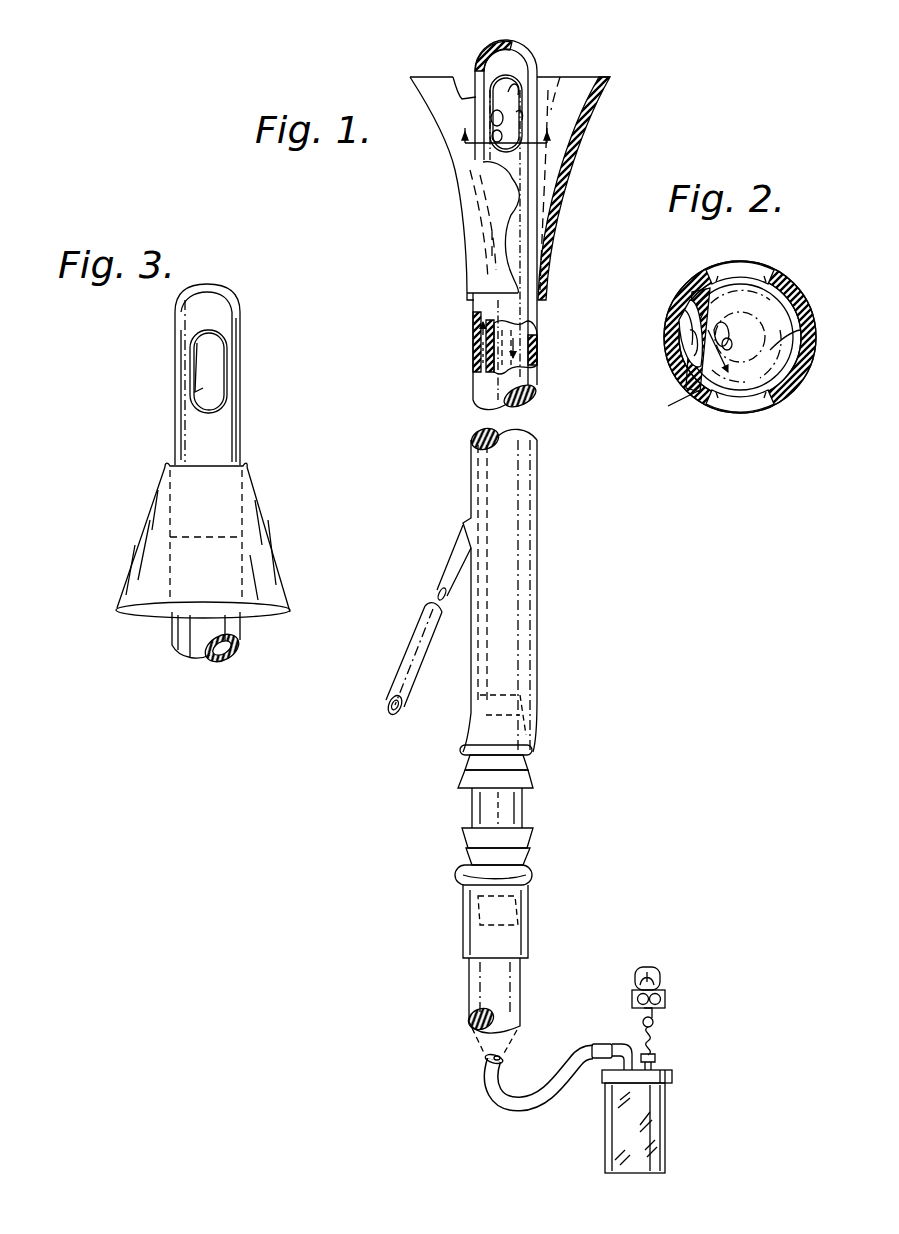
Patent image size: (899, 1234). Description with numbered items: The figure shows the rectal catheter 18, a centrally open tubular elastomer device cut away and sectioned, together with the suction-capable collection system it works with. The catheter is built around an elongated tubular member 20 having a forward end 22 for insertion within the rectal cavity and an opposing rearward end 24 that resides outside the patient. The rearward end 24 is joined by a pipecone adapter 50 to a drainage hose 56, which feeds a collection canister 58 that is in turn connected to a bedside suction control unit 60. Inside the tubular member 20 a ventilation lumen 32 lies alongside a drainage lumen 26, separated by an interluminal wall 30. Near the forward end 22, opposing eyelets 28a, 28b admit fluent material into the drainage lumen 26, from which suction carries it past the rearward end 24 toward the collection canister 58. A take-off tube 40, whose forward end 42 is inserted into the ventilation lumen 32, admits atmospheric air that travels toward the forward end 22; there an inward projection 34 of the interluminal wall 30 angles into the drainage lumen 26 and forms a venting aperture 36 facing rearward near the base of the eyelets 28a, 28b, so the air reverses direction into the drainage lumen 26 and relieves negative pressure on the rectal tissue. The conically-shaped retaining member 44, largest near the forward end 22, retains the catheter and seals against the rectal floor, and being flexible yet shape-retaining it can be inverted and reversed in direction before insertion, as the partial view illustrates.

In FIG. 1, the rectal catheter 18 is at (440, 322).
In FIG. 3, the rectal catheter 18 is at (133, 401).
In FIG. 1, the tubular member 20 is at (533, 488).
In FIG. 2, the tubular member 20 is at (802, 390).
In FIG. 1, the forward end 22 is at (525, 58).
In FIG. 3, the forward end 22 is at (233, 292).
In FIG. 1, the rearward end 24 is at (535, 760).
In FIG. 1, the drainage lumen 26 is at (537, 350).
In FIG. 2, the drainage lumen 26 is at (796, 360).
In FIG. 3, the drainage lumen 26 is at (240, 656).
In FIG. 1, the eyelet 28a is at (535, 135).
In FIG. 2, the eyelet 28a is at (748, 414).
In FIG. 1, the eyelet 28b is at (520, 102).
In FIG. 2, the eyelet 28b is at (755, 272).
In FIG. 1, the interluminal wall 30 is at (494, 60).
In FIG. 2, the interluminal wall 30 is at (682, 338).
In FIG. 1, the ventilation lumen 32 is at (478, 445).
In FIG. 2, the ventilation lumen 32 is at (684, 306).
In FIG. 1, the inward projection of the interluminal wall 34 is at (494, 112).
In FIG. 2, the inward projection of the interluminal wall 34 is at (732, 346).
In FIG. 1, the venting aperture 36 is at (492, 136).
In FIG. 2, the venting aperture 36 is at (712, 330).
In FIG. 1, the take-off tube 40 is at (422, 633).
In FIG. 1, the forward end of take-off tube 42 is at (465, 498).
In FIG. 1, the conically-shaped retaining member 44 is at (575, 152).
In FIG. 3, the conically-shaped retaining member 44 is at (262, 558).
In FIG. 1, the pipecone adapter 50 is at (528, 812).
In FIG. 1, the drainage hose 56 is at (492, 1086).
In FIG. 1, the collection canister 58 is at (605, 1125).
In FIG. 1, the suction control unit 60 is at (668, 988).